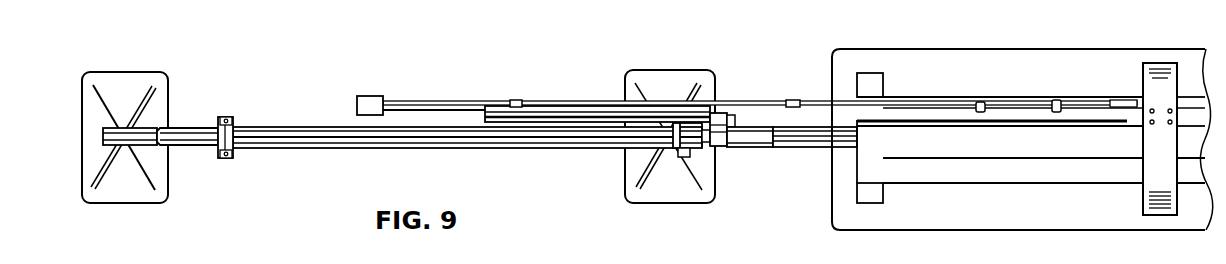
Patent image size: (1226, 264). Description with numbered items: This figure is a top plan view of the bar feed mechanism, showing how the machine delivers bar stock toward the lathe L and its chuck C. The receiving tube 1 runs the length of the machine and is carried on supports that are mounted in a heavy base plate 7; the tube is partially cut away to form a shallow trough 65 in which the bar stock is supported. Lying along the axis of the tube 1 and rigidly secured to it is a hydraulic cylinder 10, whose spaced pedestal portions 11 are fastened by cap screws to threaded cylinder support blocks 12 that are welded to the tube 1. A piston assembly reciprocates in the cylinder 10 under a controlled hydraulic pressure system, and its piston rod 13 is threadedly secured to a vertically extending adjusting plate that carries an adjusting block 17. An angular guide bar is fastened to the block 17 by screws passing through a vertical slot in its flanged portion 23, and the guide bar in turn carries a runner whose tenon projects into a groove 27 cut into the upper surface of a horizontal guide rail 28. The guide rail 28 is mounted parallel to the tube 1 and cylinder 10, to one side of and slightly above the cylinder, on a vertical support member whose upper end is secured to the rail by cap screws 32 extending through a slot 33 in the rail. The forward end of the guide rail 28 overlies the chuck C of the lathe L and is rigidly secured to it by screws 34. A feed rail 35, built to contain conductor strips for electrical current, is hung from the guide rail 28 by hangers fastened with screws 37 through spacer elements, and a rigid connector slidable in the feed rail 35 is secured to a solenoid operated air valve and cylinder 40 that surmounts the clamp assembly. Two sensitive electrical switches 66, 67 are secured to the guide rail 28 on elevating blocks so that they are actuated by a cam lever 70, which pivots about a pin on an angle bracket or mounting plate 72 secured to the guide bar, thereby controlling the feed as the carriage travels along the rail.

The base plate 7 is at (133, 85).
The receiving tube 1 is at (195, 128).
The hydraulic cylinder 10 is at (289, 127).
The pedestal portions 11 is at (231, 158).
The cylinder support blocks 12 is at (222, 158).
The feed rail 35 is at (439, 104).
The screws 37 is at (516, 100).
The guide rail 28 is at (552, 112).
The slot 33 is at (584, 112).
The cap screws 32 is at (690, 118).
The piston rod 13 is at (716, 153).
The flanged portion 23 is at (713, 151).
The adjusting block 17 is at (720, 148).
The cam lever 70 is at (710, 115).
The mounting plate 72 is at (734, 117).
The solenoid operated air valve and cylinder 40 is at (762, 148).
The trough 65 is at (820, 148).
The lathe L is at (913, 213).
The groove 27 is at (903, 126).
The electrical switch 66 is at (980, 102).
The electrical switch 67 is at (1055, 100).
The chuck C is at (1145, 195).
The screws 34 is at (1150, 113).